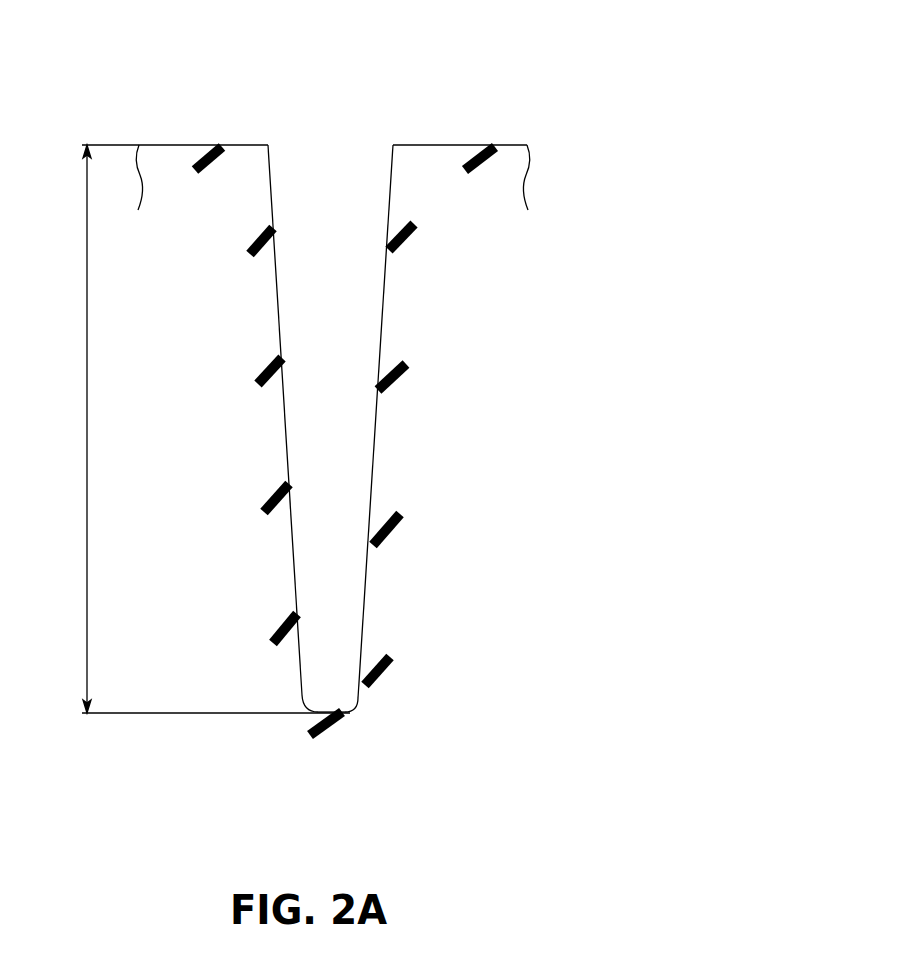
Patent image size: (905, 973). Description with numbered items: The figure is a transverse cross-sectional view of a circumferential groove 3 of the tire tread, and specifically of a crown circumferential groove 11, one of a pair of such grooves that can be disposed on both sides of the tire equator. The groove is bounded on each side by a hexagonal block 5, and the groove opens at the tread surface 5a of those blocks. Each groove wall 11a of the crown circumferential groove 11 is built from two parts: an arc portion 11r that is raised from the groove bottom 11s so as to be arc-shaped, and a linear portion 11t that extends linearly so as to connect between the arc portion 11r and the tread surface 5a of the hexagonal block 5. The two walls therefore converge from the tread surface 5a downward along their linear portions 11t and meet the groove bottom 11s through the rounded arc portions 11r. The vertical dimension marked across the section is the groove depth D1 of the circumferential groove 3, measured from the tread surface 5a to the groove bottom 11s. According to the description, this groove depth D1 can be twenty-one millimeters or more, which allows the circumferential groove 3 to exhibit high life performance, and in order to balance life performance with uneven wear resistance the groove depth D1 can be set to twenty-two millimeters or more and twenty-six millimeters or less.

The circumferential groove 3 is at (345, 138).
The hexagonal block 5 is at (460, 138).
The tread surface 5a is at (197, 143).
The crown circumferential groove 11 is at (352, 278).
The groove wall 11a is at (385, 293).
The linear portion 11t is at (287, 458).
The arc portion 11r is at (310, 710).
The groove bottom 11s is at (333, 703).
The groove depth D1 is at (197, 429).